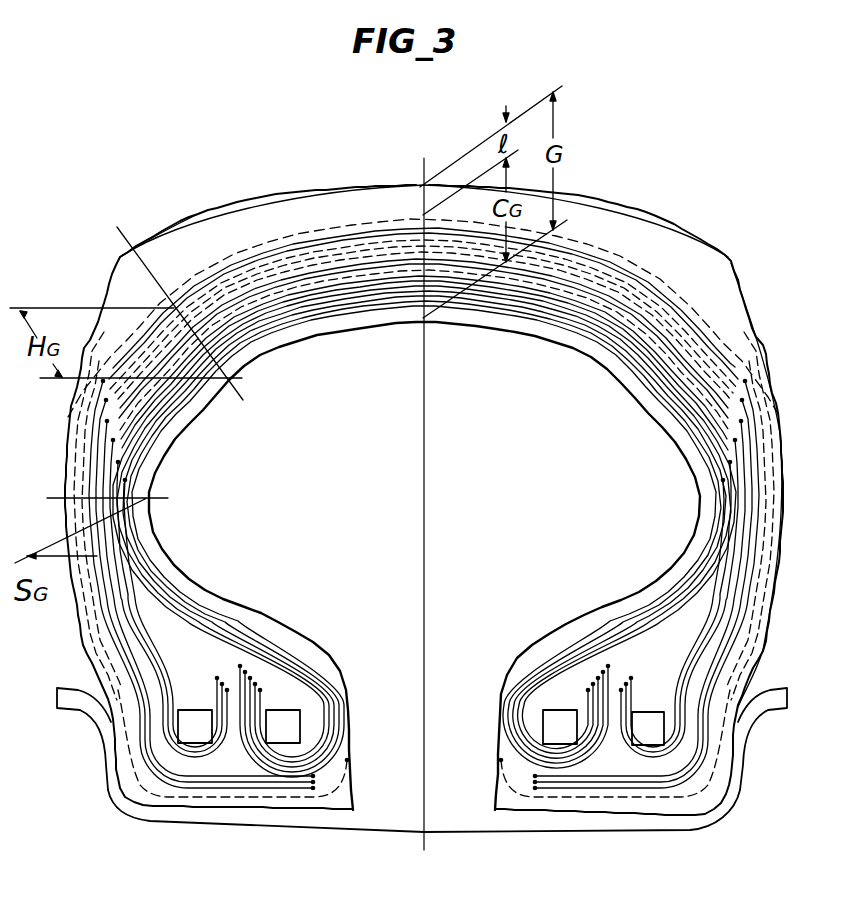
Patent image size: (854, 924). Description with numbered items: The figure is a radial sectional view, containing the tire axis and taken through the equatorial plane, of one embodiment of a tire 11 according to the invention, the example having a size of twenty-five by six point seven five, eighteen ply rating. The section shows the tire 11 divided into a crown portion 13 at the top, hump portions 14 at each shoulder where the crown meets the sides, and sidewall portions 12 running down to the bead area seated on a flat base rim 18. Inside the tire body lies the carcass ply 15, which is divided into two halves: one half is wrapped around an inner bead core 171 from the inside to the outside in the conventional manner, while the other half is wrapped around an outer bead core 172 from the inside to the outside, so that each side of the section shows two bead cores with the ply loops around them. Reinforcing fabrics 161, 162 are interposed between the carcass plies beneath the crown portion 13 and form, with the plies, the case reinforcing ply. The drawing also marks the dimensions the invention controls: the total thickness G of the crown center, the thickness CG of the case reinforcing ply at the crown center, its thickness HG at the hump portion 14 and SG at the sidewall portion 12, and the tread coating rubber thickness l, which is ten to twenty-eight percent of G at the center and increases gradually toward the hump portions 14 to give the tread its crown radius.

The tire 11 is at (752, 297).
The sidewall portion 12 is at (785, 520).
The crown portion 13 is at (387, 200).
The hump portion 14 is at (158, 253).
The carcass ply 15 is at (245, 628).
The reinforcing fabric 161 is at (402, 247).
The reinforcing fabric 162 is at (350, 277).
The inner bead core 171 is at (562, 737).
The outer bead core 172 is at (653, 733).
The flat base rim 18 is at (722, 772).